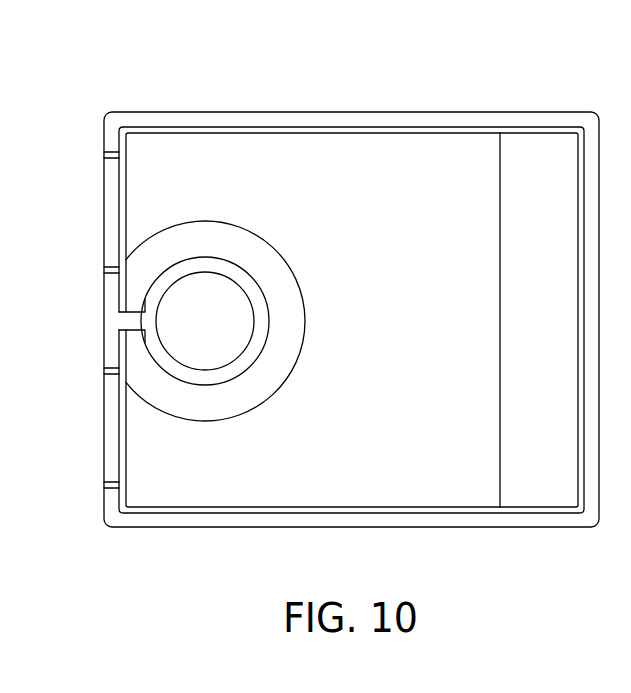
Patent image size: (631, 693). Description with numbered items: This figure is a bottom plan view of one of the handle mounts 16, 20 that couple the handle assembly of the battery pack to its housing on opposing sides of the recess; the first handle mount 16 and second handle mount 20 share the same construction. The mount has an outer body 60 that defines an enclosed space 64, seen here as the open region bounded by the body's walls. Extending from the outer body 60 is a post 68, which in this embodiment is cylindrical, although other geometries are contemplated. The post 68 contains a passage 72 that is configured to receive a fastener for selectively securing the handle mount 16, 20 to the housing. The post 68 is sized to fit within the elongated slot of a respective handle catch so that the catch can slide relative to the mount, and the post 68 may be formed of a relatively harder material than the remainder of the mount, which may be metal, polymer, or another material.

The first handle mount 16 is at (172, 80).
The second handle mount 20 is at (308, 279).
The outer body 60 is at (453, 118).
The enclosed space 64 is at (387, 178).
The post 68 is at (162, 286).
The passage 72 is at (183, 318).